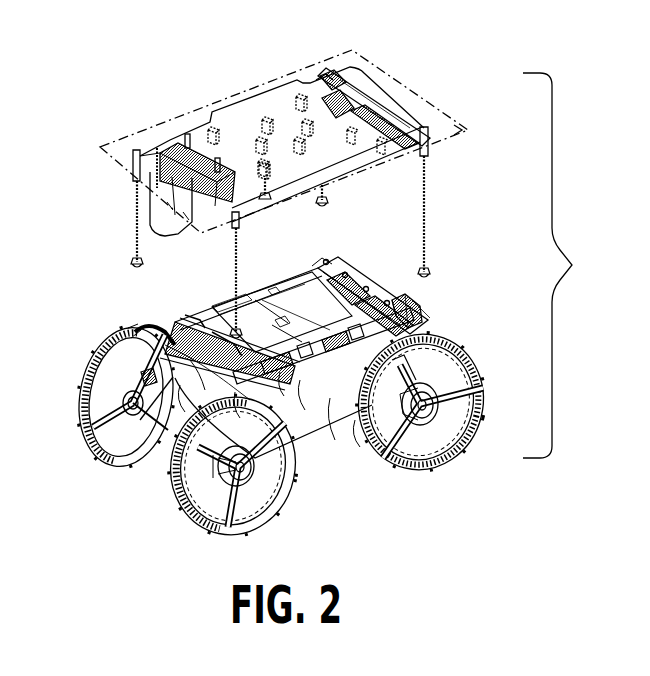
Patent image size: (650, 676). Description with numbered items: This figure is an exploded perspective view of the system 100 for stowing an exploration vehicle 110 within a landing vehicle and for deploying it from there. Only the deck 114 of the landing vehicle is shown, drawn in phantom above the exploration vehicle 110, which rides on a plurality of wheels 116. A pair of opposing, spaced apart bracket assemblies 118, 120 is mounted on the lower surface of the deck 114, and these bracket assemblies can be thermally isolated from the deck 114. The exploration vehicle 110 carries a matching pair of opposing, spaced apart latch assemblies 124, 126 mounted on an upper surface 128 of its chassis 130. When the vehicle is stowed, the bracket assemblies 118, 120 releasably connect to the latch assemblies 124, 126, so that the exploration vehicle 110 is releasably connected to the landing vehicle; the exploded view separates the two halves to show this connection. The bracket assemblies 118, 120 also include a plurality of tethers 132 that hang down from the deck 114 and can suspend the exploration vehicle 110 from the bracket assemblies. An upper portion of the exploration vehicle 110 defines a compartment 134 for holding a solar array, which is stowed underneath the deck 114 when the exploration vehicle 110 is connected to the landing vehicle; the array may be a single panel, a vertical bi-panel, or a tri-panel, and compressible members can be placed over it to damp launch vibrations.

The system 100 is at (83, 230).
The exploration vehicle 110 is at (148, 473).
The deck 114 is at (427, 108).
The wheels 116 is at (110, 350).
The bracket assembly 118 is at (336, 72).
The bracket assembly 120 is at (183, 145).
The latch assembly 124 is at (370, 105).
The latch assembly 126 is at (157, 165).
The upper surface 128 is at (405, 303).
The chassis 130 is at (335, 410).
The tethers 132 is at (428, 220).
The compartment 134 is at (217, 330).